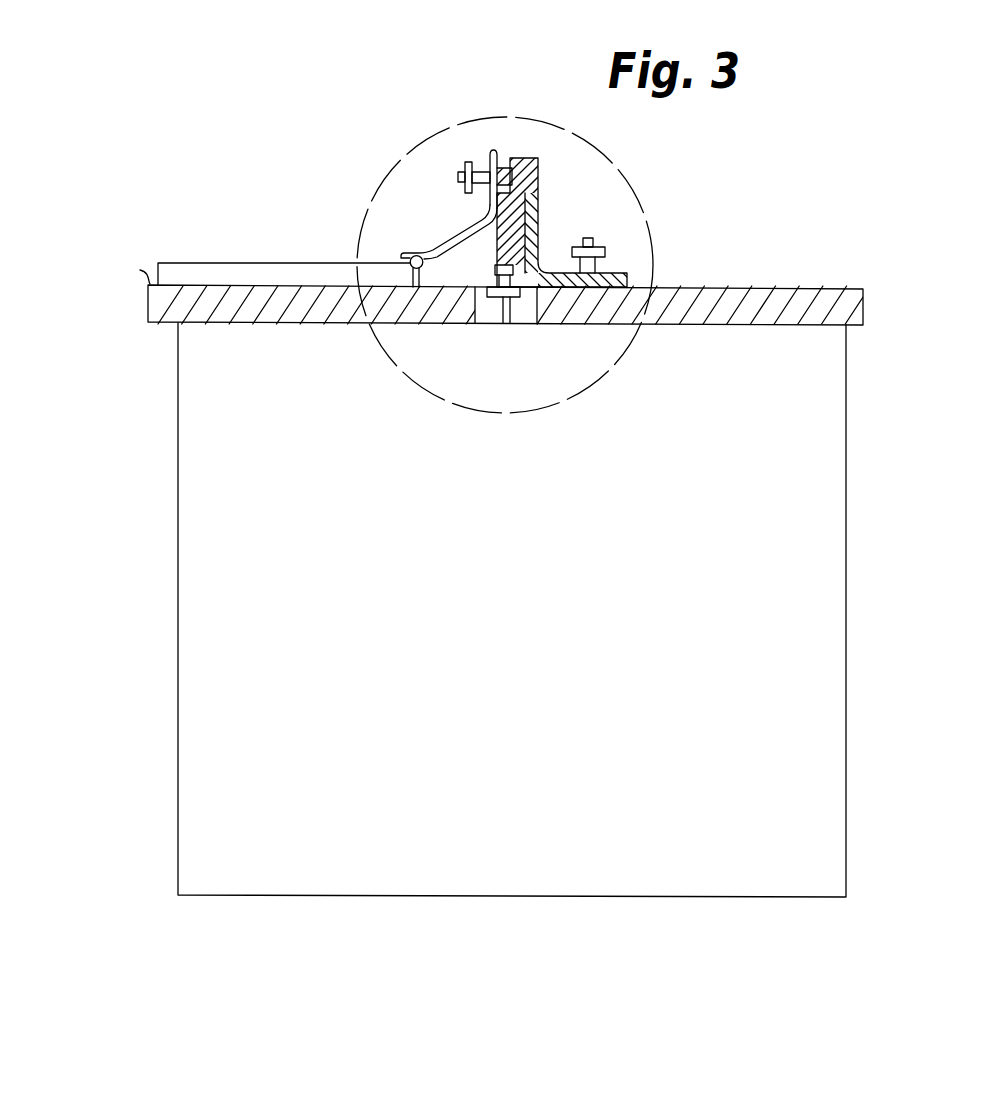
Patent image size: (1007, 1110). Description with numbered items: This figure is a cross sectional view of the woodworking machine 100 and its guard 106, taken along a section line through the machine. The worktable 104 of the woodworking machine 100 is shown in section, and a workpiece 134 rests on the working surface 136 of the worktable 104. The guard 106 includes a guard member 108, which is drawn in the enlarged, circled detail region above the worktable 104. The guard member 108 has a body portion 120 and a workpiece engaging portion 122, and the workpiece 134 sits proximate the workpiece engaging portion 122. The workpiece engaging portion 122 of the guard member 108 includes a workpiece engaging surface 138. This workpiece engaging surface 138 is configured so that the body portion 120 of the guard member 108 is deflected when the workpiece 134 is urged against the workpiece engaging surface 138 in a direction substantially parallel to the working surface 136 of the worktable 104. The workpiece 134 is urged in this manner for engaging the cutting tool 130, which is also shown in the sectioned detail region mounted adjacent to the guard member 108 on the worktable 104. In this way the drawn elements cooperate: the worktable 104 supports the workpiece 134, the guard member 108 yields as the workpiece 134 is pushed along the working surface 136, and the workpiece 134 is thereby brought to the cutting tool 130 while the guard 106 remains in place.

The woodworking machine 100 is at (875, 742).
The worktable 104 is at (863, 310).
The guard 106 is at (425, 212).
The guard member 108 is at (433, 243).
The body portion 120 is at (457, 227).
The workpiece engaging portion 122 is at (420, 276).
The cutting tool 130 is at (522, 291).
The workpiece 134 is at (222, 262).
The working surface 136 is at (140, 270).
The workpiece engaging surface 138 is at (423, 268).